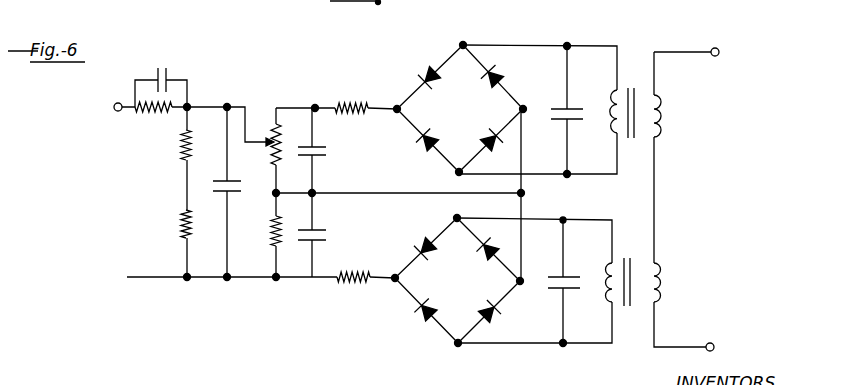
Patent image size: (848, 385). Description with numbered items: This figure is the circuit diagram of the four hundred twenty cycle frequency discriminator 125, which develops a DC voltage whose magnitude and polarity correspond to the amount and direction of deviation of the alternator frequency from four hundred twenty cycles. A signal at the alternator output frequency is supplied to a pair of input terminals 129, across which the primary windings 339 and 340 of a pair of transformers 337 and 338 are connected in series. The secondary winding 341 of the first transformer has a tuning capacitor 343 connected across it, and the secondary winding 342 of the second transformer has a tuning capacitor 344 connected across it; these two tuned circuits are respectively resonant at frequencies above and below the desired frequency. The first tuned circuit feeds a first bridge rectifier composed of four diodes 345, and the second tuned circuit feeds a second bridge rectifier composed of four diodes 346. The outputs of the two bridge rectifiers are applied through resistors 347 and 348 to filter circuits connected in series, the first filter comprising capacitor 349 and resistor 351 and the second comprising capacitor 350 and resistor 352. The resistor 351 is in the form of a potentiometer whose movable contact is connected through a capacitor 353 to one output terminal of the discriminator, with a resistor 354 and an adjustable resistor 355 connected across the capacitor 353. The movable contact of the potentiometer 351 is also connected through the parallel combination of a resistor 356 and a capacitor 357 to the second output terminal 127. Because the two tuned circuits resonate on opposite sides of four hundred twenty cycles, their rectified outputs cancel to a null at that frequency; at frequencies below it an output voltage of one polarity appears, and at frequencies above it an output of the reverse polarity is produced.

The frequency discriminator 125 is at (447, 31).
The output terminal 127 is at (115, 111).
The input terminals 129 is at (728, 326).
The transformer 337 is at (638, 86).
The transformer 338 is at (626, 310).
The primary winding 339 is at (665, 113).
The primary winding 340 is at (660, 282).
The secondary winding 341 is at (597, 102).
The secondary winding 342 is at (591, 269).
The tuning capacitor 343 is at (558, 104).
The tuning capacitor 344 is at (553, 290).
The diodes 345 is at (478, 134).
The diodes 346 is at (478, 298).
The resistor 347 is at (362, 91).
The resistor 348 is at (356, 284).
The capacitor 349 is at (326, 152).
The capacitor 350 is at (325, 236).
The potentiometer 351 is at (283, 136).
The resistor 352 is at (271, 243).
The capacitor 353 is at (216, 191).
The resistor 354 is at (181, 148).
The adjustable resistor 355 is at (182, 222).
The resistor 356 is at (150, 113).
The capacitor 357 is at (168, 75).